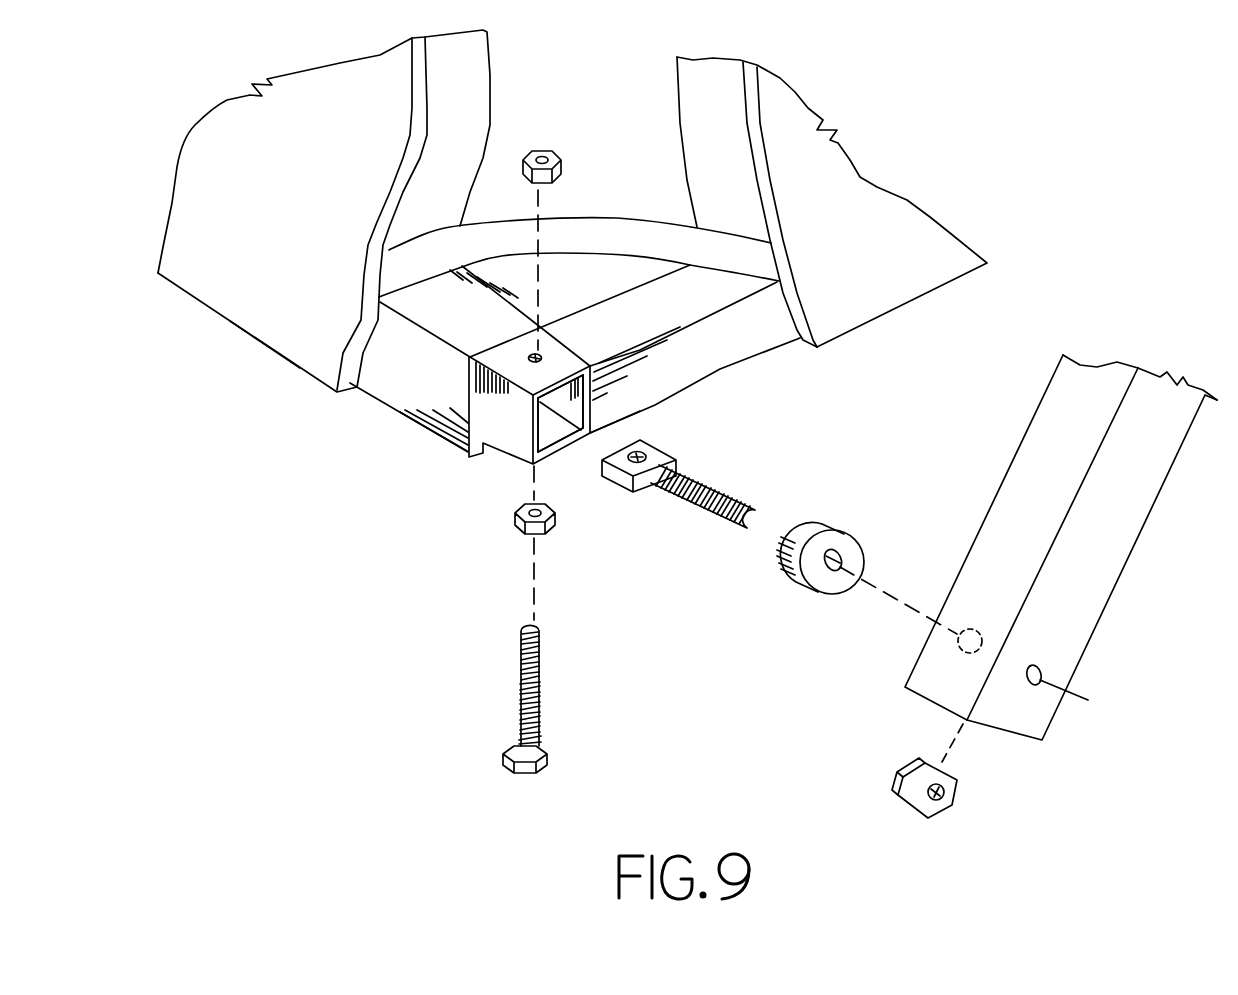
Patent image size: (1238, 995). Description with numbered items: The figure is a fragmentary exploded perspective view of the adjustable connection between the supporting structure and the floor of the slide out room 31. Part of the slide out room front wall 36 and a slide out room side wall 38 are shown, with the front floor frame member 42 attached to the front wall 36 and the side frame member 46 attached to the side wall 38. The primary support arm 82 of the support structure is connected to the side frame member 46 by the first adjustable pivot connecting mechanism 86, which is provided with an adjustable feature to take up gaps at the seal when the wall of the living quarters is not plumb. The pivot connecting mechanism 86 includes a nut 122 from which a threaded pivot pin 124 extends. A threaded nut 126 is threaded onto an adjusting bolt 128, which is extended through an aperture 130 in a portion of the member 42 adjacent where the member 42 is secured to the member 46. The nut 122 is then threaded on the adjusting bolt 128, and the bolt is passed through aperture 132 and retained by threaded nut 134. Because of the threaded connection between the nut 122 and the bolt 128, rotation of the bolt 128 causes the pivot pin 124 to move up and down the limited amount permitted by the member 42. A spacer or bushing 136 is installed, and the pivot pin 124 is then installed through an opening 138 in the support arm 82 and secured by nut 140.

The slide out room 31 is at (266, 355).
The slide out room front wall 36 is at (299, 226).
The slide out room side wall 38 is at (865, 257).
The front floor frame member 42 is at (450, 323).
The side frame member 46 is at (716, 355).
The primary support arm 82 is at (1130, 527).
The first adjustable pivot connecting mechanism 86 is at (600, 510).
The nut 122 is at (656, 454).
The threaded pivot pin 124 is at (718, 498).
The threaded nut 126 is at (515, 522).
The adjusting bolt 128 is at (548, 753).
The aperture 130 is at (548, 430).
The aperture 132 is at (541, 358).
The threaded nut 134 is at (561, 160).
The spacer or bushing 136 is at (835, 524).
The opening 138 is at (957, 640).
The nut 140 is at (953, 797).